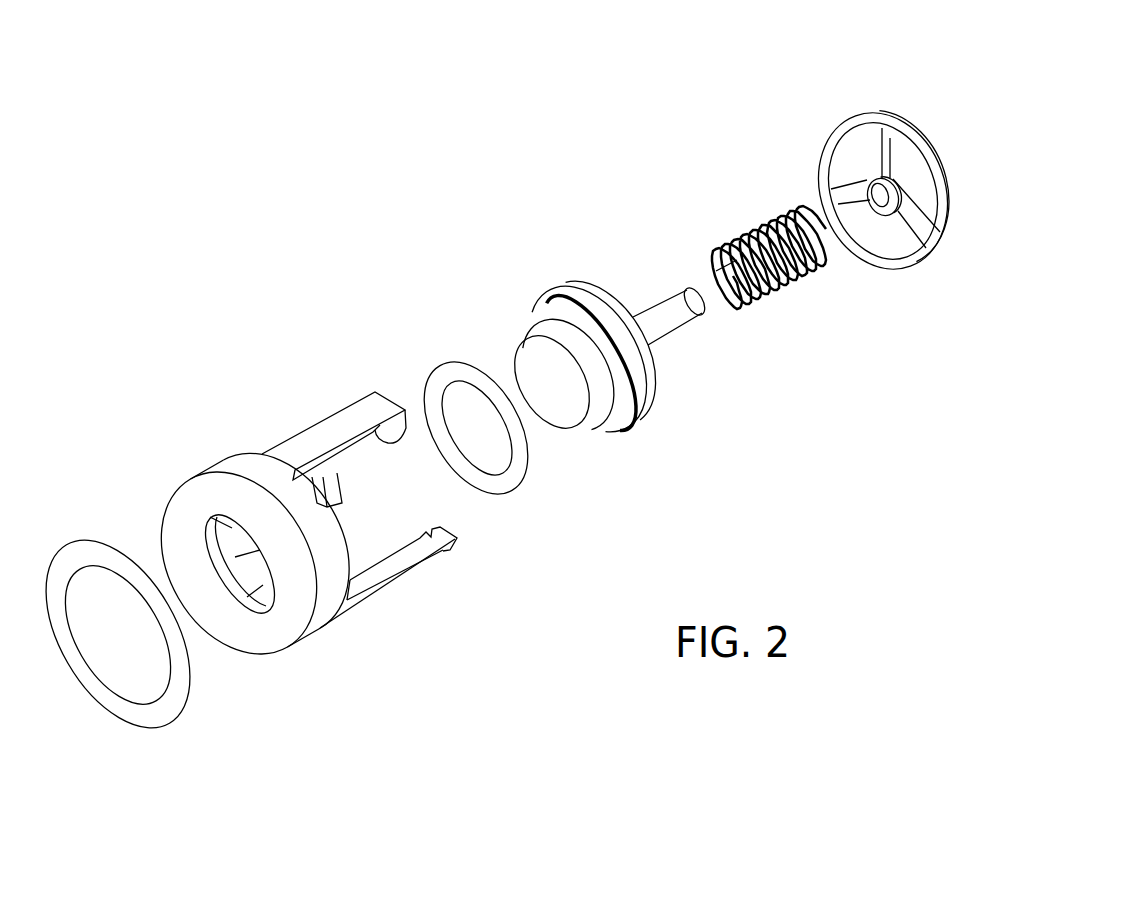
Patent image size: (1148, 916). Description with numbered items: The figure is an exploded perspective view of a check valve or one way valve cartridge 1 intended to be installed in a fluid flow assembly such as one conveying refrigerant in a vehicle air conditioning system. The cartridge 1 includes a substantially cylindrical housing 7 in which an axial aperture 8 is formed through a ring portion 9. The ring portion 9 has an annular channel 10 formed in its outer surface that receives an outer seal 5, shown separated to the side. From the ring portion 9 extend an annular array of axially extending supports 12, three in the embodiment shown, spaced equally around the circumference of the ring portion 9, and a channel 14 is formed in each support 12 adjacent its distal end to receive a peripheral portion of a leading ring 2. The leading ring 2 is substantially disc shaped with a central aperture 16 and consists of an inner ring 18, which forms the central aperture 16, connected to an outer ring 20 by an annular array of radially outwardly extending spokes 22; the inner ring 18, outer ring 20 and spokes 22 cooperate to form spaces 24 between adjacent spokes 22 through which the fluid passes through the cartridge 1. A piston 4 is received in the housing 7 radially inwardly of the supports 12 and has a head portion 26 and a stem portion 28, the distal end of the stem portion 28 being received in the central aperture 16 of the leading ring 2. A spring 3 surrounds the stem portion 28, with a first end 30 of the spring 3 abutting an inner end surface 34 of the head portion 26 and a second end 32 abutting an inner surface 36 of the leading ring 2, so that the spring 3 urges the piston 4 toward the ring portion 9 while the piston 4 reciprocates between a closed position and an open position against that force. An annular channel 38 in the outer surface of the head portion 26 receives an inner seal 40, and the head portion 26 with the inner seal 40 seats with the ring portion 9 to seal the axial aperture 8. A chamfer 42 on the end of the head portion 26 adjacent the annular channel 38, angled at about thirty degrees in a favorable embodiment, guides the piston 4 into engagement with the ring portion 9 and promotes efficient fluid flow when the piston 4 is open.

The one way valve cartridge 1 is at (306, 193).
The leading ring 2 is at (951, 185).
The spring 3 is at (787, 307).
The piston 4 is at (686, 340).
The outer seal 5 is at (162, 715).
The housing 7 is at (246, 452).
The axial aperture 8 is at (243, 628).
The ring portion 9 is at (216, 471).
The annular channel 10 is at (297, 648).
The supports 12 is at (407, 575).
The channel 14 is at (402, 428).
The central aperture 16 is at (880, 213).
The inner ring 18 is at (906, 183).
The outer ring 20 is at (872, 117).
The spokes 22 is at (914, 240).
The spaces 24 is at (842, 172).
The head portion 26 is at (528, 332).
The stem portion 28 is at (652, 312).
The first end 30 is at (747, 310).
The second end 32 is at (830, 260).
The inner end surface 34 is at (657, 398).
The inner surface 36 is at (945, 238).
The annular channel 38 is at (567, 320).
The inner seal 40 is at (517, 480).
The chamfer 42 is at (590, 393).